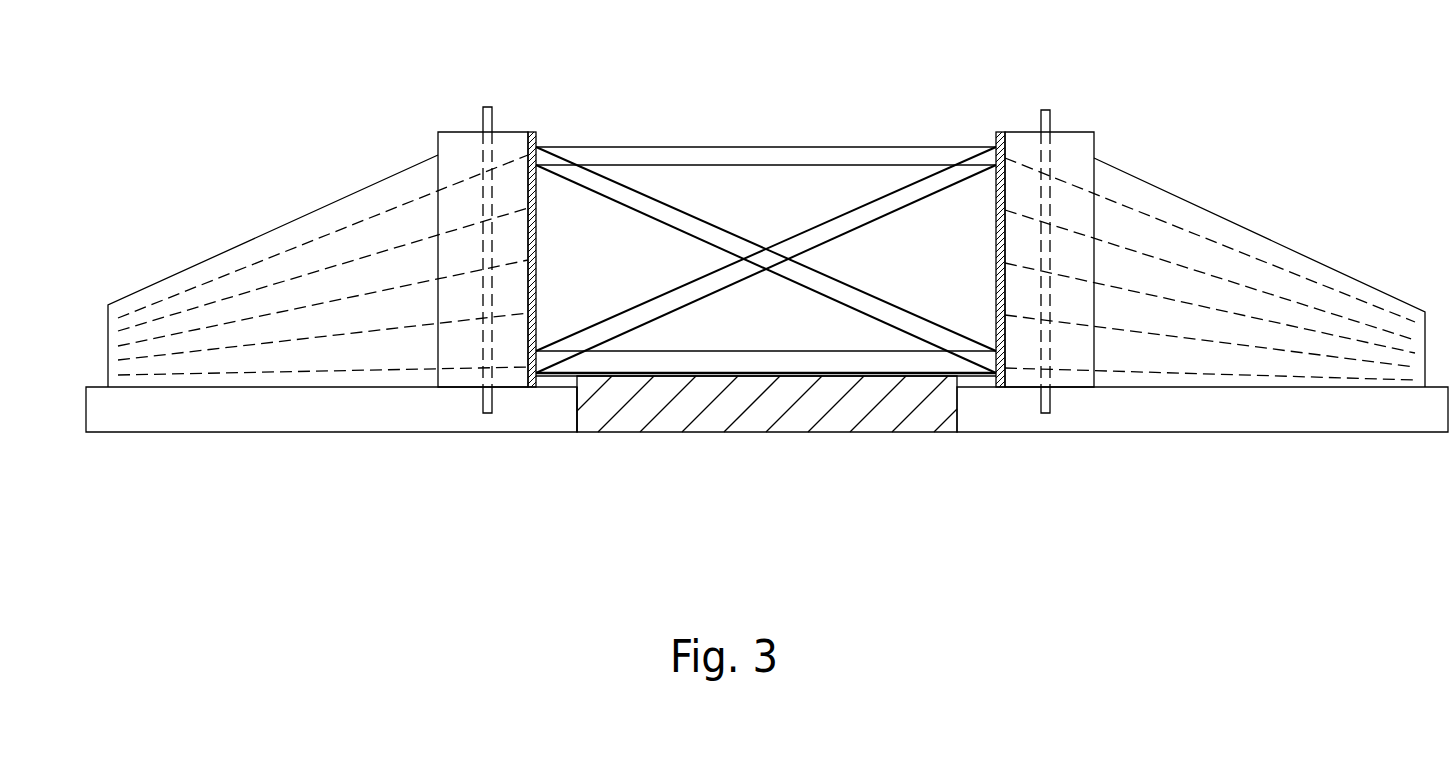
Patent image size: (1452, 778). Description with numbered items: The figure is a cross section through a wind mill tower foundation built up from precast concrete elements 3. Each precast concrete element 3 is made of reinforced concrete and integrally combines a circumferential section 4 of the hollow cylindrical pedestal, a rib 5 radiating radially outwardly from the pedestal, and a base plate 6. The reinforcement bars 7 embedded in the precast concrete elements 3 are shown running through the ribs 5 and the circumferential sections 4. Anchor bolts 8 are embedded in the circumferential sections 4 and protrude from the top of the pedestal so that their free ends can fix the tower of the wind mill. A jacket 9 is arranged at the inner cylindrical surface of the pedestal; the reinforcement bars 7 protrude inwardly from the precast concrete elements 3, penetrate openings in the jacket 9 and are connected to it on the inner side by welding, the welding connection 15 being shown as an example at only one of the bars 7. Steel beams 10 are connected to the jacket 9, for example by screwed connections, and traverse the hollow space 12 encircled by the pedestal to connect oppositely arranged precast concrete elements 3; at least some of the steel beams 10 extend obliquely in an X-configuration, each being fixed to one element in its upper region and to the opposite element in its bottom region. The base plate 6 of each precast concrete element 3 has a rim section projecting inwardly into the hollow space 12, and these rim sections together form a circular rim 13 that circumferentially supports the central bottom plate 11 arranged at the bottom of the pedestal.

The precast concrete element 3 is at (197, 238).
The circumferential section 4 is at (465, 155).
The rib 5 is at (318, 227).
The base plate 6 is at (273, 410).
The reinforcement bars 7 is at (1260, 318).
The anchor bolts 8 is at (487, 121).
The jacket 9 is at (995, 207).
The steel beams 10 is at (822, 235).
The central bottom plate 11 is at (690, 400).
The hollow space 12 is at (785, 320).
The circular rim 13 is at (553, 410).
The welding connection 15 is at (535, 257).